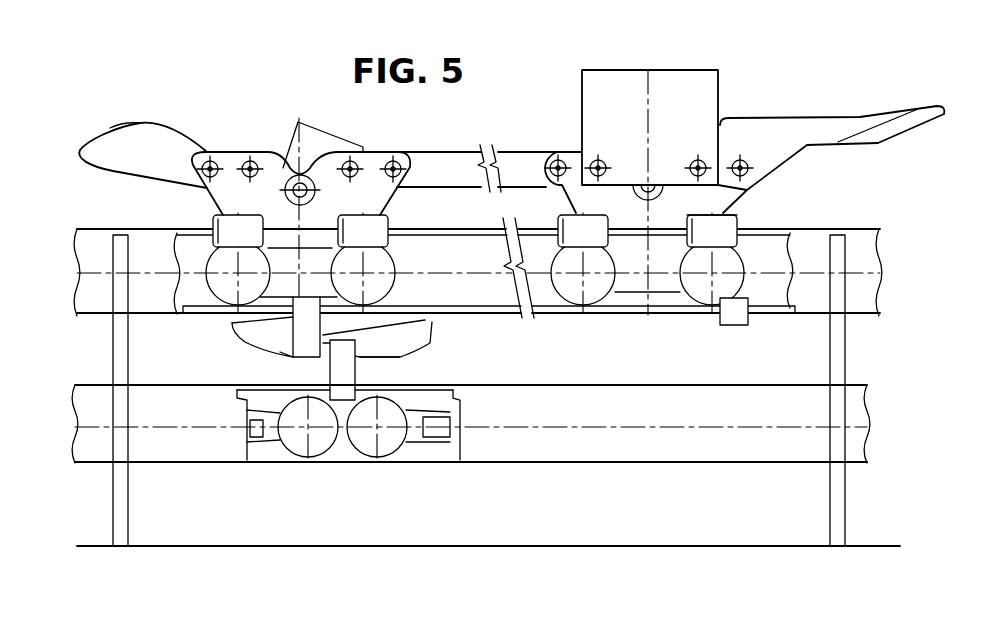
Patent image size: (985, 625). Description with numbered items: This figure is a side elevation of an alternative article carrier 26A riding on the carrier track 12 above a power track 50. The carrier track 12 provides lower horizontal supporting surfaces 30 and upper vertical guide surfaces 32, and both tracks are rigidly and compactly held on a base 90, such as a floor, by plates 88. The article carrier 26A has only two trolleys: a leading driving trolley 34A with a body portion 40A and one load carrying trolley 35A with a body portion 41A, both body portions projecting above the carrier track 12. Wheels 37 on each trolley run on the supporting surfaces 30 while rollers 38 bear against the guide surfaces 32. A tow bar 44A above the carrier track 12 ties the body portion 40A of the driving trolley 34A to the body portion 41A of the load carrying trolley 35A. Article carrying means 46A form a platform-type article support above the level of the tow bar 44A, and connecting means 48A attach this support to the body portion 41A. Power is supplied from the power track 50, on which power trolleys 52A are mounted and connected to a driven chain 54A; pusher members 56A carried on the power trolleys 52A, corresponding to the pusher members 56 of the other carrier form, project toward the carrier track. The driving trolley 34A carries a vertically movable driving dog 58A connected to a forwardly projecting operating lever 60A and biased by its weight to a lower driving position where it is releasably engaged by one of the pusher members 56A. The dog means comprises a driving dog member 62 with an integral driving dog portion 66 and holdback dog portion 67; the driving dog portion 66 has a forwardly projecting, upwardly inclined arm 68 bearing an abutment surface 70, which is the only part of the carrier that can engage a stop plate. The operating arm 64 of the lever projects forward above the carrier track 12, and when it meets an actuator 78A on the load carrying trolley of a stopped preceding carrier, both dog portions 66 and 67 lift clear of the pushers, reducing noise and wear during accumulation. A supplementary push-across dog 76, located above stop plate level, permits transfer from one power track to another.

The carrier track 12 is at (140, 228).
The article carrier 26A is at (762, 110).
The supporting surfaces 30 is at (473, 299).
The guide surfaces 32 is at (460, 232).
The driving trolley 34A is at (207, 197).
The load carrying trolley 35A is at (752, 191).
The wheels 37 is at (397, 260).
The rollers 38 is at (388, 220).
The body portion 40A is at (379, 208).
The body portion 41A is at (719, 213).
The tow bar 44A is at (476, 122).
The article carrying means 46A is at (703, 68).
The connecting means 48A is at (600, 158).
The power track 50 is at (740, 383).
The power trolleys 52A is at (341, 448).
The driven chain 54A is at (430, 450).
The pusher members 56 is at (975, 341).
The pusher members 56A is at (357, 372).
The driving dog 58A is at (425, 321).
The operating lever 60A is at (168, 126).
The driving dog member 62 is at (233, 318).
The operating arm 64 is at (138, 122).
The driving dog portion 66 is at (310, 362).
The holdback dog portion 67 is at (398, 355).
The arm 68 is at (243, 342).
The abutment surface 70 is at (290, 356).
The push-across dog 76 is at (735, 325).
The actuator 78A is at (900, 135).
The plates 88 is at (130, 500).
The base 90 is at (597, 543).